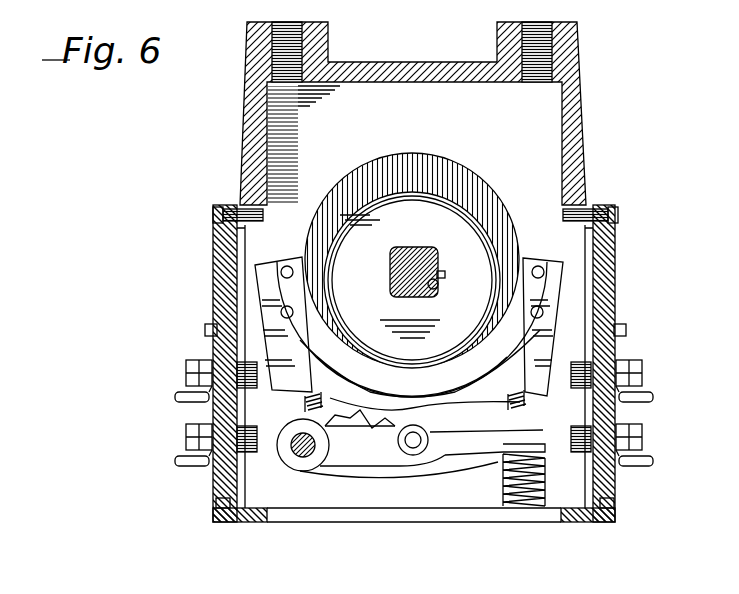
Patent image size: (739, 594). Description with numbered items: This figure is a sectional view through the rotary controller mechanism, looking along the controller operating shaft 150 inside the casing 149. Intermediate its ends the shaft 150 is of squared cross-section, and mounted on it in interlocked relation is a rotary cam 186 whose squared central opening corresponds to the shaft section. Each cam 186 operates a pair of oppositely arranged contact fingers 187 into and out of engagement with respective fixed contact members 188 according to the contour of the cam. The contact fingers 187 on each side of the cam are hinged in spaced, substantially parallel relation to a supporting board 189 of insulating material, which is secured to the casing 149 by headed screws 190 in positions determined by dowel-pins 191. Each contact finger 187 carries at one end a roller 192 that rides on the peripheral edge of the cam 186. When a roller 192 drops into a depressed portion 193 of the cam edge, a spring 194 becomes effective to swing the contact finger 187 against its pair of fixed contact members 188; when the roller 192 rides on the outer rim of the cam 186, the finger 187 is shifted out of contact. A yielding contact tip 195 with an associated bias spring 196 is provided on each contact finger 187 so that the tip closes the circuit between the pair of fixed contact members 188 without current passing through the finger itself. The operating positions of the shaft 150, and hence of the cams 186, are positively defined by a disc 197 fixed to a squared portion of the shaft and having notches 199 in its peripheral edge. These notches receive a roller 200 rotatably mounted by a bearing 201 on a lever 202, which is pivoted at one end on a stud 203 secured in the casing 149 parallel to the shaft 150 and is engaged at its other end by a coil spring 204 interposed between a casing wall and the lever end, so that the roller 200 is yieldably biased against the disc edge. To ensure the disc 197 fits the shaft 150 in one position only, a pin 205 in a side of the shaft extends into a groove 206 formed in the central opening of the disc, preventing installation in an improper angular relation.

The casing 149 is at (583, 162).
The controller operating shaft 150 is at (412, 252).
The rotary cam 186 is at (458, 194).
The contact finger 187 is at (300, 323).
The fixed contact member 188 is at (200, 400).
The supporting board 189 is at (224, 292).
The headed screw 190 is at (214, 214).
The dowel-pin 191 is at (206, 328).
The roller 192 is at (304, 268).
The depressed portion 193 is at (428, 410).
The spring 194 is at (258, 282).
The yielding contact tip 195 is at (270, 455).
The bias spring 196 is at (315, 407).
The disc 197 is at (387, 421).
The notch 199 is at (355, 398).
The roller 200 is at (403, 448).
The bearing 201 is at (420, 450).
The lever 202 is at (362, 468).
The stud 203 is at (308, 458).
The coil spring 204 is at (503, 491).
The pin 205 is at (438, 286).
The groove 206 is at (443, 272).